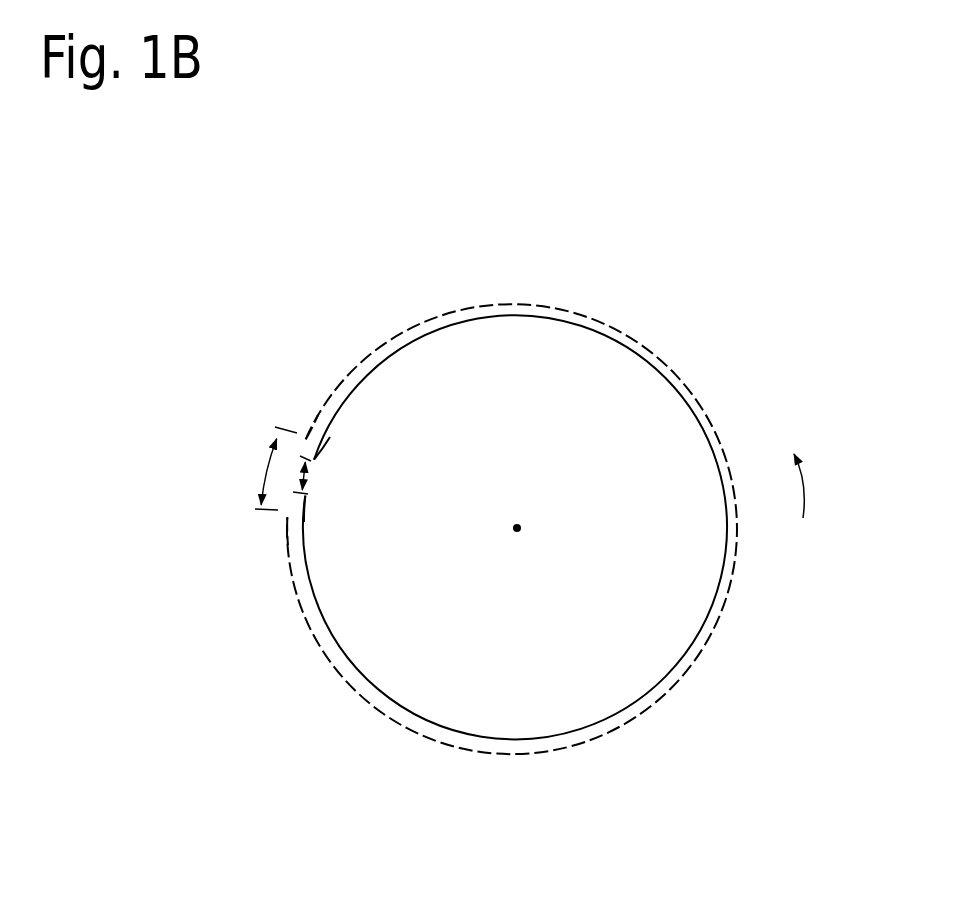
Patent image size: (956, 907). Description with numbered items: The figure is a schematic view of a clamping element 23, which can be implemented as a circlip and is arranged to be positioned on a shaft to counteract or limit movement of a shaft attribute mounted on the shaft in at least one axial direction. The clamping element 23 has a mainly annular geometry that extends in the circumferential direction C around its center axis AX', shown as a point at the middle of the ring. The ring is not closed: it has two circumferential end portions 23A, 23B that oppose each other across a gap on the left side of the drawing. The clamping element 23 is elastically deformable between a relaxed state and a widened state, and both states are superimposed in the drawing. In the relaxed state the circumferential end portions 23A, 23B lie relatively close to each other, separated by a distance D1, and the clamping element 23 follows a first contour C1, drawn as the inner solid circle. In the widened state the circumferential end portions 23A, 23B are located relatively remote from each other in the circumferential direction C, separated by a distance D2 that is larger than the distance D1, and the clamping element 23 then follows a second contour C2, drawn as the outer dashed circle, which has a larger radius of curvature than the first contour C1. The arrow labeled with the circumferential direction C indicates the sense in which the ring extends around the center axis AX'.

The clamping element 23 is at (542, 501).
The circumferential end portion 23A is at (301, 424).
The circumferential end portion 23B is at (276, 519).
The first contour C1 is at (582, 327).
The second contour C2 is at (538, 306).
The distance D1 is at (319, 475).
The distance D2 is at (262, 468).
The circumferential direction C is at (813, 486).
The center axis AX' is at (547, 510).